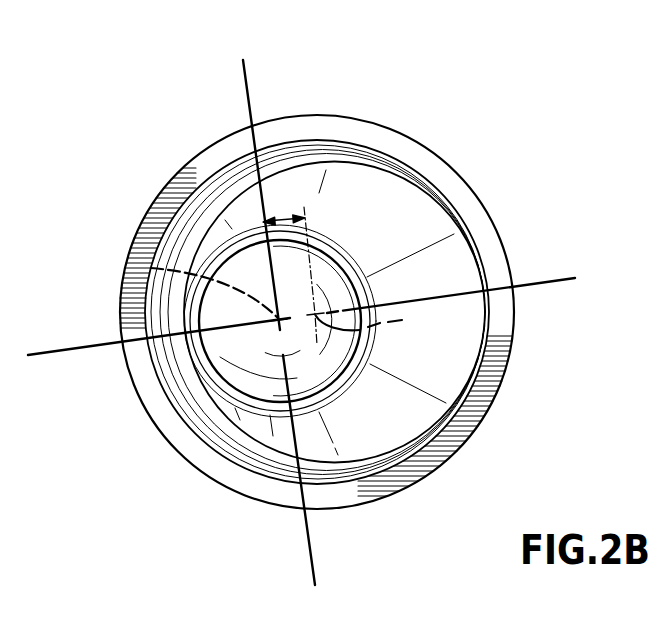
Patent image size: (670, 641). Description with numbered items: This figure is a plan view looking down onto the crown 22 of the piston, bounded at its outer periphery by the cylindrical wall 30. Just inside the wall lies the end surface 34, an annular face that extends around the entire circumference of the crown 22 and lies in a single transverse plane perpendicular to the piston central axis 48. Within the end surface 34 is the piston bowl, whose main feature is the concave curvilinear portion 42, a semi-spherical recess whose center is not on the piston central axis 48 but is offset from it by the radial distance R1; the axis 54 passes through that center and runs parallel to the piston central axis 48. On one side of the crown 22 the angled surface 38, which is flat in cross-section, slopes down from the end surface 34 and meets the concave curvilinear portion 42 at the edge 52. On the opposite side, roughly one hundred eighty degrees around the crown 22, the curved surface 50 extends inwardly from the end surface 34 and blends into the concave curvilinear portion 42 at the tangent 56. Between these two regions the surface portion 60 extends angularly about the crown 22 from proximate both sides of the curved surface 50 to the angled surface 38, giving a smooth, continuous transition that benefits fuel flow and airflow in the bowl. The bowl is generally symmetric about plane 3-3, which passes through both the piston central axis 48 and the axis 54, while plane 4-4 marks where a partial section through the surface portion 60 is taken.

The crown 22 is at (480, 80).
The cylindrical wall 30 is at (485, 425).
The end surface 34 is at (217, 162).
The angled surface 38 is at (442, 295).
The concave curvilinear portion 42 is at (244, 369).
The piston central axis 48 is at (402, 320).
The curved surface 50 is at (165, 373).
The edge 52 is at (364, 305).
The axis 54 is at (147, 270).
The tangent 56 is at (172, 343).
The surface portion 60 is at (338, 196).
The radial distance R1 is at (291, 238).
The plane 3- 3 is at (40, 317).
The plane 4- 4 is at (285, 65).